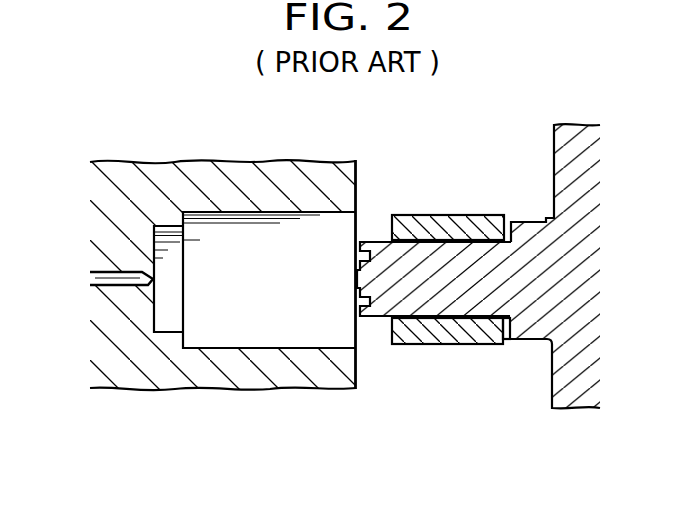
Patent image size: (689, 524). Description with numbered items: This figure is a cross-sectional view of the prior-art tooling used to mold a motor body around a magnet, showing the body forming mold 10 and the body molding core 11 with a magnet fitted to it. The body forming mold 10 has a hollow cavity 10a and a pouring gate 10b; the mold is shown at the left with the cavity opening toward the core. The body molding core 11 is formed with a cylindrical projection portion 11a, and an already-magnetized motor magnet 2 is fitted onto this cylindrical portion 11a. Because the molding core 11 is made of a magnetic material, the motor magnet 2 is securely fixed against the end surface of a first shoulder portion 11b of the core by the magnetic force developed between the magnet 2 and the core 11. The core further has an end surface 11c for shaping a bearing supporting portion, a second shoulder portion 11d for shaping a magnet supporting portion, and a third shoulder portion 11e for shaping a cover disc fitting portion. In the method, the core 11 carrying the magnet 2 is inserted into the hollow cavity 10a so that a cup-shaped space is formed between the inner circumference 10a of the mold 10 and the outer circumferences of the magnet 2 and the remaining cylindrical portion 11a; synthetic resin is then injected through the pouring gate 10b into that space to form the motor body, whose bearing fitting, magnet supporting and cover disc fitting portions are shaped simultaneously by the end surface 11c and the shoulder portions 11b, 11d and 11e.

The motor magnet 2 is at (437, 215).
The body forming mold 10 is at (190, 161).
The hollow cavity 10a is at (275, 212).
The pouring gate 10b is at (92, 277).
The body molding core 11 is at (528, 260).
The cylindrical projection portion 11a is at (412, 304).
The first shoulder portion 11b is at (470, 333).
The end surface 11c is at (365, 245).
The second shoulder portion 11d is at (508, 343).
The third shoulder portion 11e is at (548, 345).